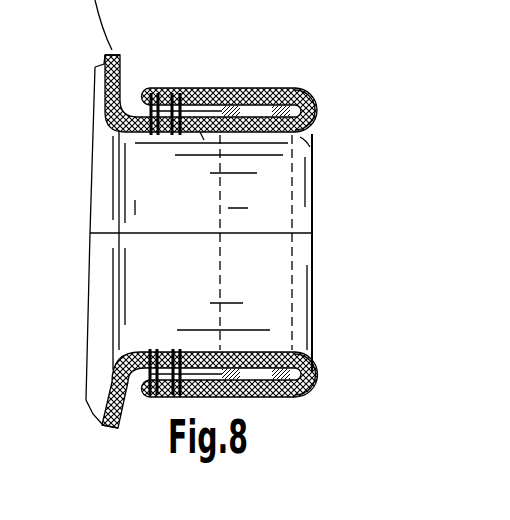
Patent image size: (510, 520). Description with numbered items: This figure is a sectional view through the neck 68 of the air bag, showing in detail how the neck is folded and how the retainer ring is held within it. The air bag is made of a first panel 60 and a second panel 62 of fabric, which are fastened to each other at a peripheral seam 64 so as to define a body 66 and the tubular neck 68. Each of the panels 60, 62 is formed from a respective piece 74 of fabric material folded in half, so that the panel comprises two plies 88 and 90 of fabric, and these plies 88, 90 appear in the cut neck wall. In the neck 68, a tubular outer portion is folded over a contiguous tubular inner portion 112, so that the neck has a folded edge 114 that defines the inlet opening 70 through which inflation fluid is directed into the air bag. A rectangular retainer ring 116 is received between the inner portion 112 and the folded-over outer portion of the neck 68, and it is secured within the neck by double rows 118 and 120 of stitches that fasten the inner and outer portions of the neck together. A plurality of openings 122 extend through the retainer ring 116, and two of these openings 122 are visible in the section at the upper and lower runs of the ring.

The first panel 60 is at (102, 208).
The second panel 62 is at (102, 290).
The peripheral seam 64 is at (88, 246).
The body 66 is at (123, 72).
The neck 68 is at (233, 88).
The inlet opening 70 is at (306, 190).
The piece of fabric material 74 is at (112, 433).
The ply 88 is at (123, 55).
The ply 90 is at (113, 50).
The tubular inner portion 112 is at (202, 132).
The folded edge 114 is at (316, 112).
The retainer ring 116 is at (308, 385).
The double row of stitches 118 is at (151, 350).
The double row of stitches 120 is at (179, 350).
The openings 122 is at (256, 110).